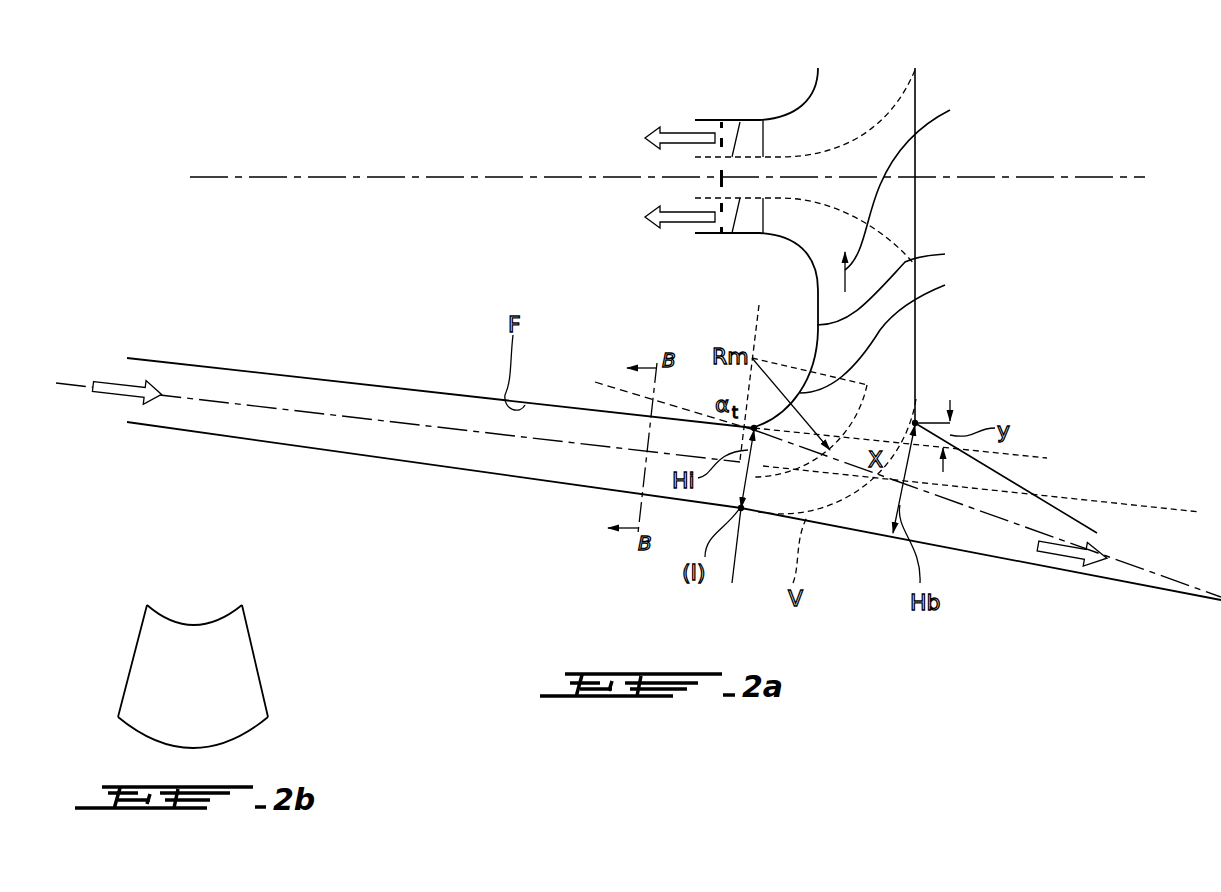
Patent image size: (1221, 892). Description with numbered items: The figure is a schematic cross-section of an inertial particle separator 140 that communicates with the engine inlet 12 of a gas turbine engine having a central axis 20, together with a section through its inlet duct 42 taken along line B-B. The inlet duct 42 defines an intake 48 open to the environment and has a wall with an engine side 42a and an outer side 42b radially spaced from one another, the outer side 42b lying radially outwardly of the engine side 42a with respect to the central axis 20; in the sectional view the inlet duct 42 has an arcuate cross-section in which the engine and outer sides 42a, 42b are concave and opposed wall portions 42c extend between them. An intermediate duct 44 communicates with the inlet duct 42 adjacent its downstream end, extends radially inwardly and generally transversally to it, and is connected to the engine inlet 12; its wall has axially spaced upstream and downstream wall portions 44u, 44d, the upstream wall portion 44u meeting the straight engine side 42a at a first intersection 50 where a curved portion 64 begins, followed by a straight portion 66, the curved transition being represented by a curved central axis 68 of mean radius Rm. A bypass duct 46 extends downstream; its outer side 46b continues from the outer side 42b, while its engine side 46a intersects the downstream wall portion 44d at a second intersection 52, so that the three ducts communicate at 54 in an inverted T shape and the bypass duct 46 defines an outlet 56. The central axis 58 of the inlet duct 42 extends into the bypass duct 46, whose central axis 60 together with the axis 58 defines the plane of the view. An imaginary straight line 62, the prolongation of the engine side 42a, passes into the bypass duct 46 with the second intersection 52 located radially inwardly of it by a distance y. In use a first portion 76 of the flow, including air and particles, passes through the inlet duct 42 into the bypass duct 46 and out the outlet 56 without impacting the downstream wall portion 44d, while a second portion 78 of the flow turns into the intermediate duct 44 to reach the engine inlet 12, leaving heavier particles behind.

In FIG. 2A, the gas turbine engine 140 is at (256, 125).
In FIG. 2A, the engine inlet 12 is at (729, 135).
In FIG. 2A, the central axis 20 is at (1117, 177).
In FIG. 2A, the second portion of the flow 78 is at (909, 195).
In FIG. 2A, the intermediate duct 44 is at (919, 222).
In FIG. 2A, the straight portion 66 is at (900, 270).
In FIG. 2A, the curved portion 64 is at (903, 306).
In FIG. 2A, the upstream wall portion 44u is at (817, 305).
In FIG. 2A, the downstream wall portion 44d is at (917, 338).
In FIG. 2A, the first intersection 50 is at (755, 425).
In FIG. 2A, the second intersection 52 is at (918, 420).
In FIG. 2A, the imaginary straight line 62 is at (1035, 458).
In FIG. 2A, the engine side of the bypass duct wall 46a is at (1020, 488).
In FIG. 2A, the first portion of the flow 76 is at (120, 397).
In FIG. 2A, the intake 48 is at (130, 372).
In FIG. 2A, the engine side of the inlet duct wall 42a is at (313, 377).
In FIG. 2B, the engine side of the inlet duct wall 42a is at (193, 623).
In FIG. 2A, the inlet duct 42 is at (628, 405).
In FIG. 2B, the inlet duct 42 is at (213, 664).
In FIG. 2A, the outer side of the inlet duct wall 42b is at (357, 455).
In FIG. 2B, the outer side of the inlet duct wall 42b is at (245, 733).
In FIG. 2B, the opposed wall portions 42c is at (132, 658).
In FIG. 2A, the central axis of the inlet duct 58 is at (507, 435).
In FIG. 2A, the curved central axis 68 is at (775, 476).
In FIG. 2A, the outer side of the bypass duct wall 46b is at (835, 530).
In FIG. 2A, the communication region 54 is at (842, 493).
In FIG. 2A, the bypass duct 46 is at (981, 543).
In FIG. 2A, the outlet 56 is at (1082, 568).
In FIG. 2A, the central axis of the bypass duct 60 is at (1185, 587).